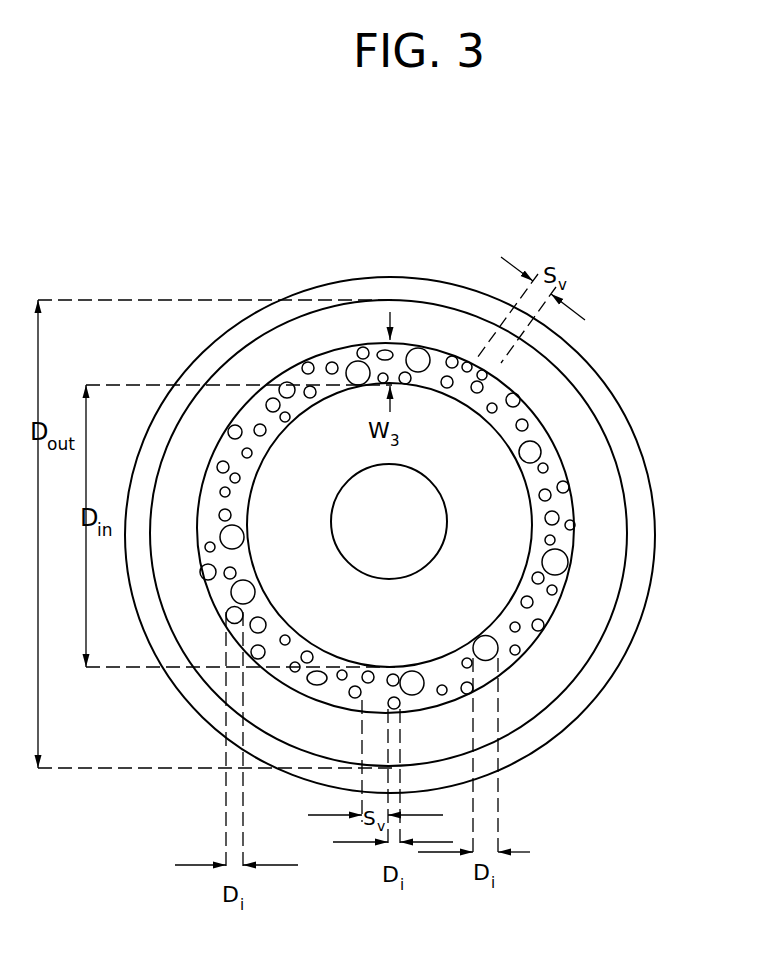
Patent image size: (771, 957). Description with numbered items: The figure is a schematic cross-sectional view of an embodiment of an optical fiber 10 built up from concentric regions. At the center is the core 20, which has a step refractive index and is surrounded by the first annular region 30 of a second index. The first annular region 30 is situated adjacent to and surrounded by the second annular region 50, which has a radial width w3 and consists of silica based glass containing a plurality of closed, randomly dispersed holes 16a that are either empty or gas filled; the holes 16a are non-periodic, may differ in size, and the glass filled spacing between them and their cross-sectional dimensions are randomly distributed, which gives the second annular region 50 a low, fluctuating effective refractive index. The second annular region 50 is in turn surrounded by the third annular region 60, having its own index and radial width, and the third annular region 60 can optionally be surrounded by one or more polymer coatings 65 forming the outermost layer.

The optical fiber 10 is at (441, 262).
The holes 16a is at (518, 398).
The core 20 is at (408, 528).
The first annular region 30 is at (460, 587).
The second annular region 50 is at (530, 637).
The third annular region 60 is at (527, 688).
The polymer coatings 65 is at (527, 735).